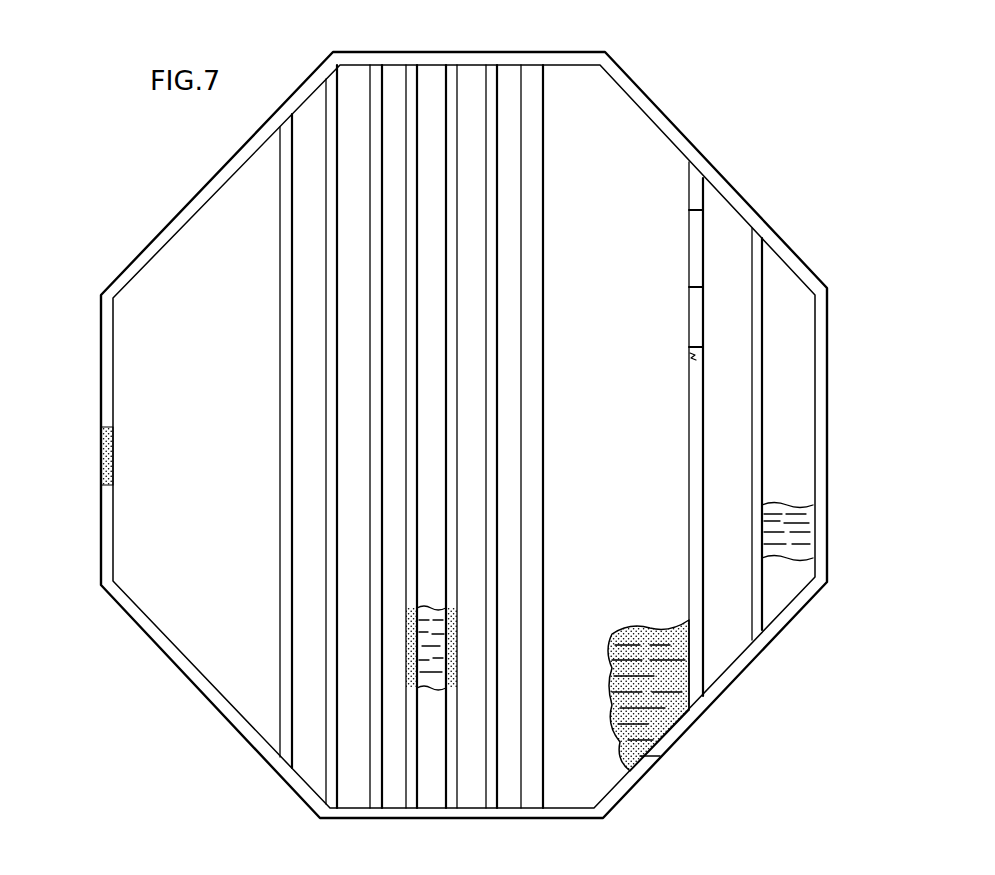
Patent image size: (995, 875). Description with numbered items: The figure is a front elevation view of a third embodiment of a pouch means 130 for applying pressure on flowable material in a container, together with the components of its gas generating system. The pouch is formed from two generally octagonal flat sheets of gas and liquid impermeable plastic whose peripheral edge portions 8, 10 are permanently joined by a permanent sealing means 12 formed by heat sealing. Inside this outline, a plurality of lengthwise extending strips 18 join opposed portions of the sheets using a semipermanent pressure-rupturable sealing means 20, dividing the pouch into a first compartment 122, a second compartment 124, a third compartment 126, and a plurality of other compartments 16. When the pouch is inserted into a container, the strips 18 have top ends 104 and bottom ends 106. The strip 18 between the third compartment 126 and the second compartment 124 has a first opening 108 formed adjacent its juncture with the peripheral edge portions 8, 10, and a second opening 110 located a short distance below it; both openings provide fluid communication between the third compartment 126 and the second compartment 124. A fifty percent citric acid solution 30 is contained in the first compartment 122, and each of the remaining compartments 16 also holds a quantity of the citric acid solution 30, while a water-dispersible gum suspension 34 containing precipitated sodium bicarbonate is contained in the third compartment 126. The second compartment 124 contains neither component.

The peripheral edge portion 8 is at (163, 637).
The peripheral edge portion 10 is at (101, 472).
The permanent sealing means 12 is at (96, 444).
The compartments 16 is at (262, 152).
The lengthwise extending strips 18 is at (567, 409).
The semipermanent pressure-rupturable sealing means 20 is at (405, 670).
The citric acid solution 30 is at (418, 629).
The water-dispersible gum suspension 34 is at (645, 640).
The top ends 104 is at (755, 238).
The bottom ends 106 is at (753, 620).
The first opening 108 is at (688, 187).
The second opening 110 is at (691, 314).
The first compartment 122 is at (808, 424).
The second compartment 124 is at (744, 424).
The third compartment 126 is at (624, 521).
The pouch means 130 is at (748, 689).